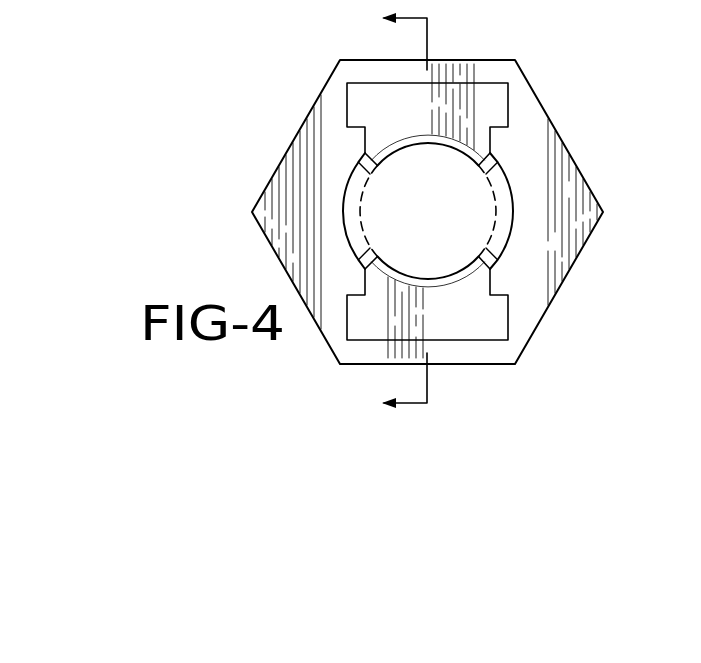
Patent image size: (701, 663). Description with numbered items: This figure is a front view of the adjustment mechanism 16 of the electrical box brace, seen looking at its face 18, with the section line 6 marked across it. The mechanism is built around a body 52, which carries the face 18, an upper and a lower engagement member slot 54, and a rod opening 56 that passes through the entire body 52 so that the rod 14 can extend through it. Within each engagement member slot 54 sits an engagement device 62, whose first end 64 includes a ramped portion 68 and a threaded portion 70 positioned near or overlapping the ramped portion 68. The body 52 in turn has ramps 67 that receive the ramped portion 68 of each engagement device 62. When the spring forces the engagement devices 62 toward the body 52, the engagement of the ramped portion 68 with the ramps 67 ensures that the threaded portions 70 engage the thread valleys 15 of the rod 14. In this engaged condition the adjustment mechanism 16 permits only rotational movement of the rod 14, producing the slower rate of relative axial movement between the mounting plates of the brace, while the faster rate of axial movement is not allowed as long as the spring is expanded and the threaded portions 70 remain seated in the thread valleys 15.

The section line 6- 6 is at (394, 215).
The rod 14 is at (331, 217).
The thread valleys 15 is at (345, 243).
The adjustment mechanism 16 is at (292, 92).
The face 18 is at (529, 104).
The body 52 is at (600, 186).
The engagement member slot 54 is at (489, 120).
The rod opening 56 is at (348, 184).
The engagement device 62 is at (450, 88).
The first end 64 is at (488, 95).
The ramps 67 is at (303, 214).
The ramped portion 68 is at (384, 97).
The threaded portion 70 is at (428, 145).